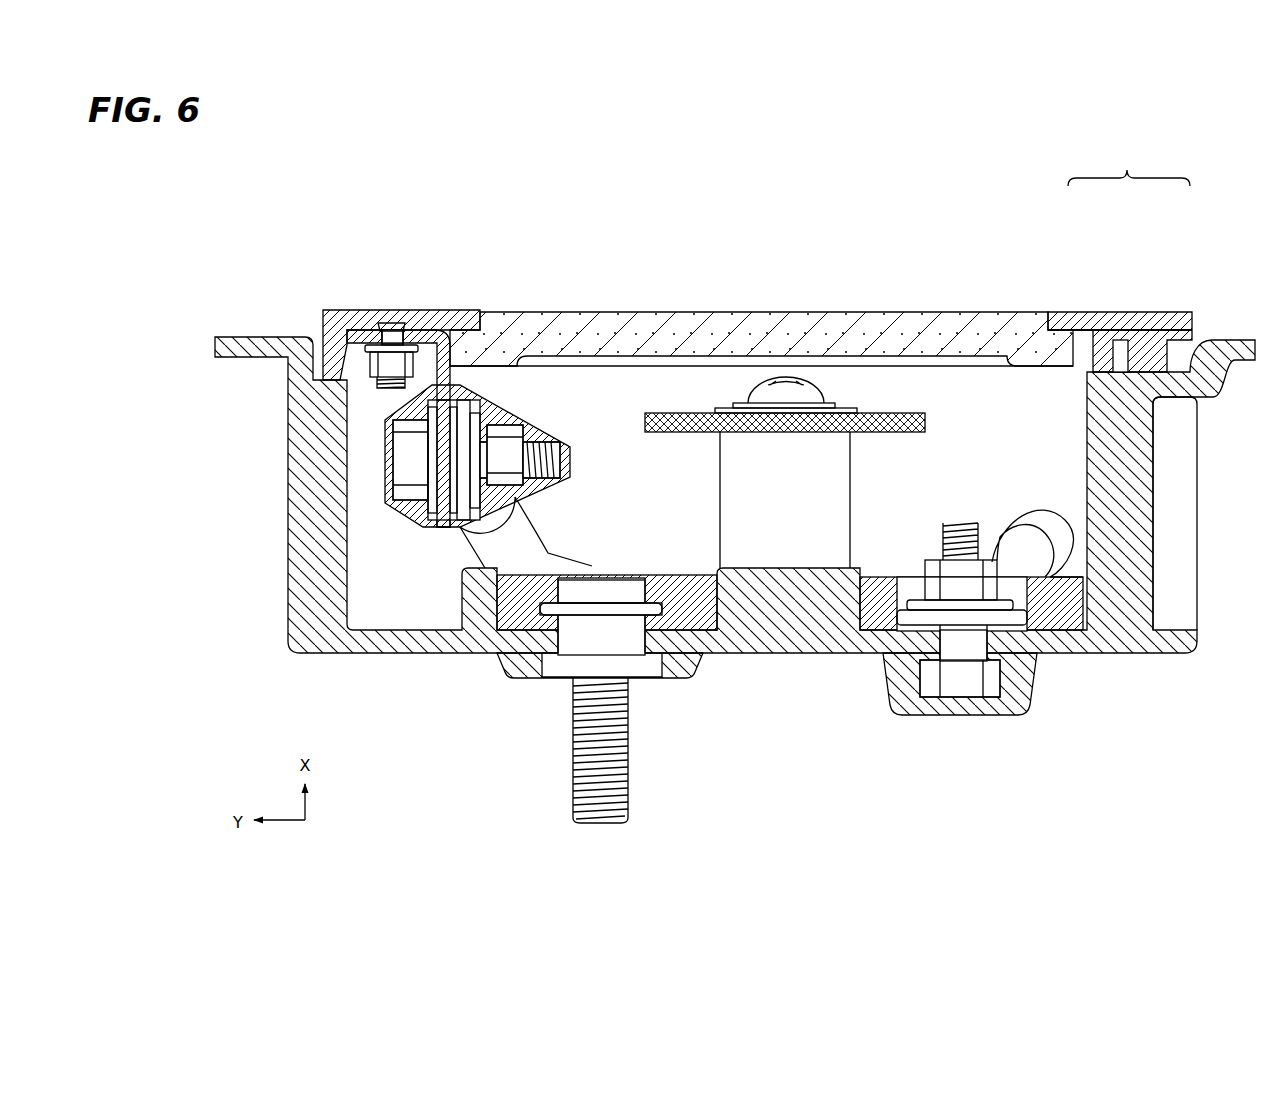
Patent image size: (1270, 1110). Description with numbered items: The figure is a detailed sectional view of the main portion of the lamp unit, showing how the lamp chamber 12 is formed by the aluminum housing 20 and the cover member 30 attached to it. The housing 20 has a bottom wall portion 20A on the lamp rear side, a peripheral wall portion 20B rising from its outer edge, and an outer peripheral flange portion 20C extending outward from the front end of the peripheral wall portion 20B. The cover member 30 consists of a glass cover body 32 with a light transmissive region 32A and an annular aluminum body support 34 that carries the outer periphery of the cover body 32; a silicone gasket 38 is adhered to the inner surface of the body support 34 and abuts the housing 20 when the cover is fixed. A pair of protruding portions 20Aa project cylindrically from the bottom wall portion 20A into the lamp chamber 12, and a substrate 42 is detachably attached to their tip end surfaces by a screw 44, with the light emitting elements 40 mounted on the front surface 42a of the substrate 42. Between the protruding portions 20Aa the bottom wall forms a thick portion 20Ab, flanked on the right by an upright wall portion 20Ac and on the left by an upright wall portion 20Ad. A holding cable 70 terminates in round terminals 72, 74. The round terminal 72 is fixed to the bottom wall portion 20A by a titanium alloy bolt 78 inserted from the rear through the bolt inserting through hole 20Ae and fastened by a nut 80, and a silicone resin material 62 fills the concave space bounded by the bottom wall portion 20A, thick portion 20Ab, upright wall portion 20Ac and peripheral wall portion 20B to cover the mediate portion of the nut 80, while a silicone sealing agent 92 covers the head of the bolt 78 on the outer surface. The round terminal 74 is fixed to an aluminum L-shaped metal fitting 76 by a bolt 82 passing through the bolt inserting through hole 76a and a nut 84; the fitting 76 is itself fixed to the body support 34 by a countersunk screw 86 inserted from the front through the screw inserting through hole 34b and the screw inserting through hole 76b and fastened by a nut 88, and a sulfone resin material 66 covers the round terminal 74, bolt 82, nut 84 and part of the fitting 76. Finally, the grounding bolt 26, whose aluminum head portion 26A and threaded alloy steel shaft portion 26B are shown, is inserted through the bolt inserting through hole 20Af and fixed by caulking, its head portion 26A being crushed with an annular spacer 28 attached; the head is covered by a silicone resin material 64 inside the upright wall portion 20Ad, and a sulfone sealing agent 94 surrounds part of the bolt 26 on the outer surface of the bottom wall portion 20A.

The lamp chamber 12 is at (659, 476).
The housing 20 is at (1110, 655).
The bottom wall portion 20A is at (398, 640).
The peripheral wall portion 20B is at (300, 580).
The outer peripheral flange portion 20C is at (258, 337).
The protruding portion 20Aa is at (840, 482).
The thick portion 20Ab is at (795, 585).
The upright wall portion 20Ac is at (905, 575).
The upright wall portion 20Ad is at (473, 598).
The bolt inserting through hole 20Ae is at (973, 647).
The bolt inserting through hole 20Af is at (565, 655).
The bolt 26 is at (653, 671).
The head portion 26A is at (612, 588).
The shaft portion 26B is at (620, 733).
The annular spacer 28 is at (705, 628).
The cover member 30 is at (757, 260).
The cover body 32 is at (1031, 310).
The light transmissive region 32A is at (735, 330).
The body support 34 is at (1114, 310).
The screw inserting through hole 34b is at (393, 330).
The gasket 38 is at (1198, 412).
The light emitting element 40 is at (722, 406).
The substrate 42 is at (818, 352).
The front surface 42a is at (905, 413).
The screw 44 is at (786, 378).
The resin material 62 is at (840, 618).
The resin material 64 is at (507, 613).
The resin material 66 is at (536, 426).
The holding cable 70 is at (1028, 503).
The round terminal 72 is at (880, 625).
The round terminal 74 is at (465, 430).
The L-shaped metal fitting 76 is at (458, 350).
The bolt inserting through hole 76a is at (395, 507).
The screw inserting through hole 76b is at (379, 330).
The bolt 78 is at (953, 683).
The nut 80 is at (960, 570).
The bolt 82 is at (405, 464).
The nut 84 is at (512, 462).
The countersunk screw 86 is at (383, 325).
The nut 88 is at (390, 367).
The sealing agent 92 is at (912, 716).
The sealing agent 94 is at (520, 680).